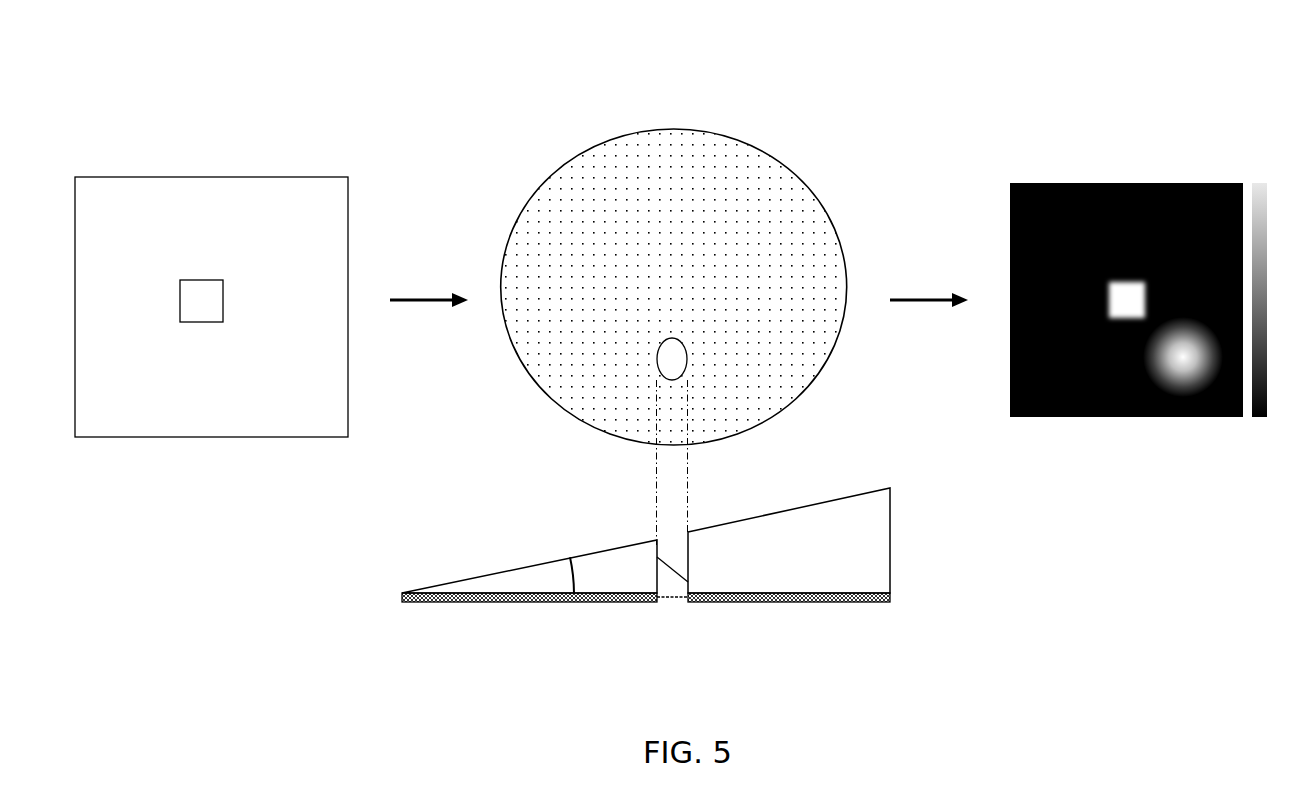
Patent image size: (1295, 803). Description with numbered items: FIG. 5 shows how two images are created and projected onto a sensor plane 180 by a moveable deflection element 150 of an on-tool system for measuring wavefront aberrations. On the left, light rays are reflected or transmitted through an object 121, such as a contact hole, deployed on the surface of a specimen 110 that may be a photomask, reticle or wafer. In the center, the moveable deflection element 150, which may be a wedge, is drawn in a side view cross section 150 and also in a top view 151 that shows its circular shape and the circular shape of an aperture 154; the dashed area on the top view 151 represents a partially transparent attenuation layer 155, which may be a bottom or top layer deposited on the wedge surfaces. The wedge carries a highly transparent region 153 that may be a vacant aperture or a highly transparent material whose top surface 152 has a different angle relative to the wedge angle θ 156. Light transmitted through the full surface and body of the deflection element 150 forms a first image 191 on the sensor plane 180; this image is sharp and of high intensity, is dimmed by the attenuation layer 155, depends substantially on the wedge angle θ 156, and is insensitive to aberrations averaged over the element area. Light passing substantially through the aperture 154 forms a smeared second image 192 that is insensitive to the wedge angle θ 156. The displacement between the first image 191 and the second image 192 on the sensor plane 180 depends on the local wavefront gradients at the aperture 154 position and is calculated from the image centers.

The specimen 110 is at (76, 177).
The object 121 is at (190, 280).
The moveable deflection element 150 is at (863, 495).
The top view of moveable deflection element 151 is at (676, 128).
The top surface of highly transparent region 152 is at (670, 563).
The highly transparent region 153 is at (673, 603).
The aperture 154 is at (657, 363).
The attenuation layer 155 is at (868, 602).
The wedge angle θ 156 is at (568, 557).
The sensor plane 180 is at (1033, 183).
The first image 191 is at (1110, 284).
The second image 192 is at (1190, 327).